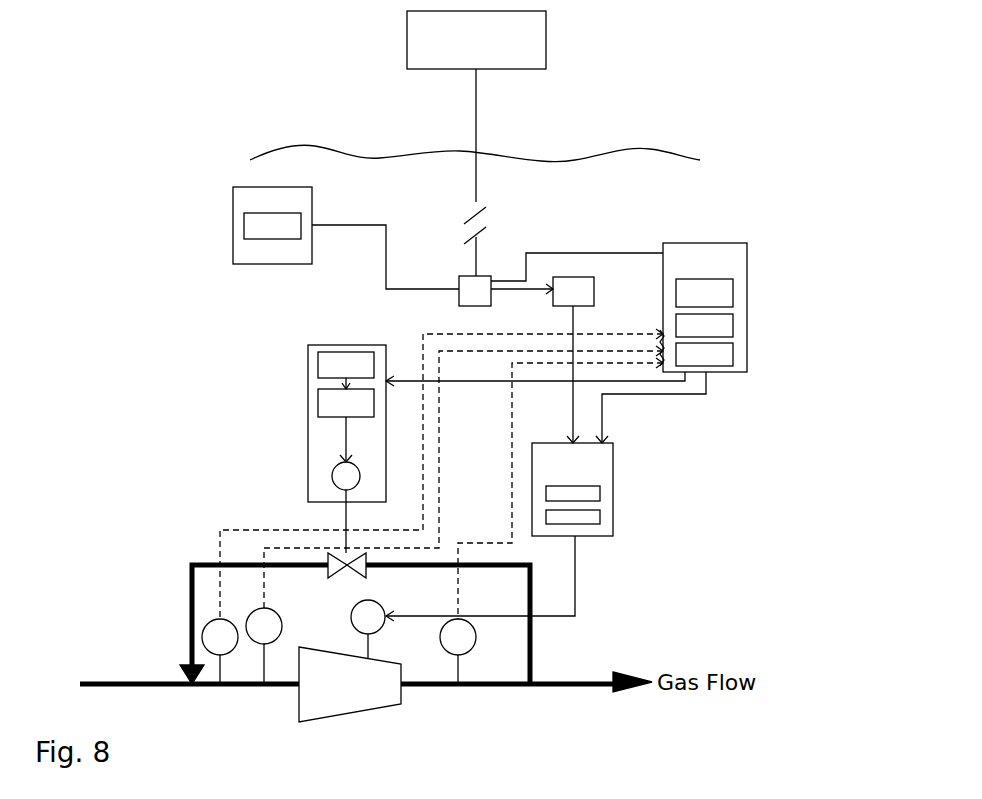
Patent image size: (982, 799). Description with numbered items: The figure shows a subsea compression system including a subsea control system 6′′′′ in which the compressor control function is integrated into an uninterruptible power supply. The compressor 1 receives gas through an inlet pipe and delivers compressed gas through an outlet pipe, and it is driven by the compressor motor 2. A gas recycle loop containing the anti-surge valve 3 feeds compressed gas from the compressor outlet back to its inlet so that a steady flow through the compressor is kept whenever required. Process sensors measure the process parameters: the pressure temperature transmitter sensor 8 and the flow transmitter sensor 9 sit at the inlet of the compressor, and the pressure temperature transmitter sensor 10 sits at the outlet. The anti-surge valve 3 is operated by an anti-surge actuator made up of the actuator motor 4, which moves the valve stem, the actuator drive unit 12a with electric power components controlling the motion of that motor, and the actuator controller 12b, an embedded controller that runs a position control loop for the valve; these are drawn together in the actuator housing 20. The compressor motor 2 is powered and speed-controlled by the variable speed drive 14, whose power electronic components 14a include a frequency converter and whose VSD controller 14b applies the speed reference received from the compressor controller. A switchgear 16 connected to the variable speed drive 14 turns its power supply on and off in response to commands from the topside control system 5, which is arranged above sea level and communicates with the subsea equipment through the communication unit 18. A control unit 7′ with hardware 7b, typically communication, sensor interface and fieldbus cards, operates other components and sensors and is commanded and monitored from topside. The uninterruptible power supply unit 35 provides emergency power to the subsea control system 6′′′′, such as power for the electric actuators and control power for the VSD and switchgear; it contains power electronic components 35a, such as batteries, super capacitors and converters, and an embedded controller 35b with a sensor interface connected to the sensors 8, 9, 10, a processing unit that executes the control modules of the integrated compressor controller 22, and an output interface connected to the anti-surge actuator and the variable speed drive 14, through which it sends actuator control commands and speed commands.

The compressor 1 is at (361, 694).
The compressor motor 2 is at (352, 620).
The anti-surge valve 3 is at (366, 572).
The actuator motor 4 is at (333, 470).
The topside control system 5 is at (527, 43).
The subsea control system 6′′′′ is at (163, 258).
The control unit 7′ is at (232, 195).
The hardware 7b is at (252, 232).
The pressure temperature transmitter sensor 8 is at (203, 637).
The flow transmitter sensor 9 is at (271, 610).
The pressure temperature transmitter sensor 10 is at (476, 637).
The actuator drive unit 12a is at (322, 408).
The actuator controller 12b is at (322, 372).
The variable speed drive 14 is at (614, 455).
The power electronic components 14a is at (590, 519).
The VSD controller 14b is at (590, 496).
The switchgear 16 is at (590, 294).
The communication unit 18 is at (467, 284).
The valve control unit 20 is at (305, 347).
The compressor controller 22 is at (725, 297).
The uninterruptible power supply unit 35 is at (748, 247).
The power electronic components 35a is at (725, 358).
The embedded controller 35b is at (725, 326).